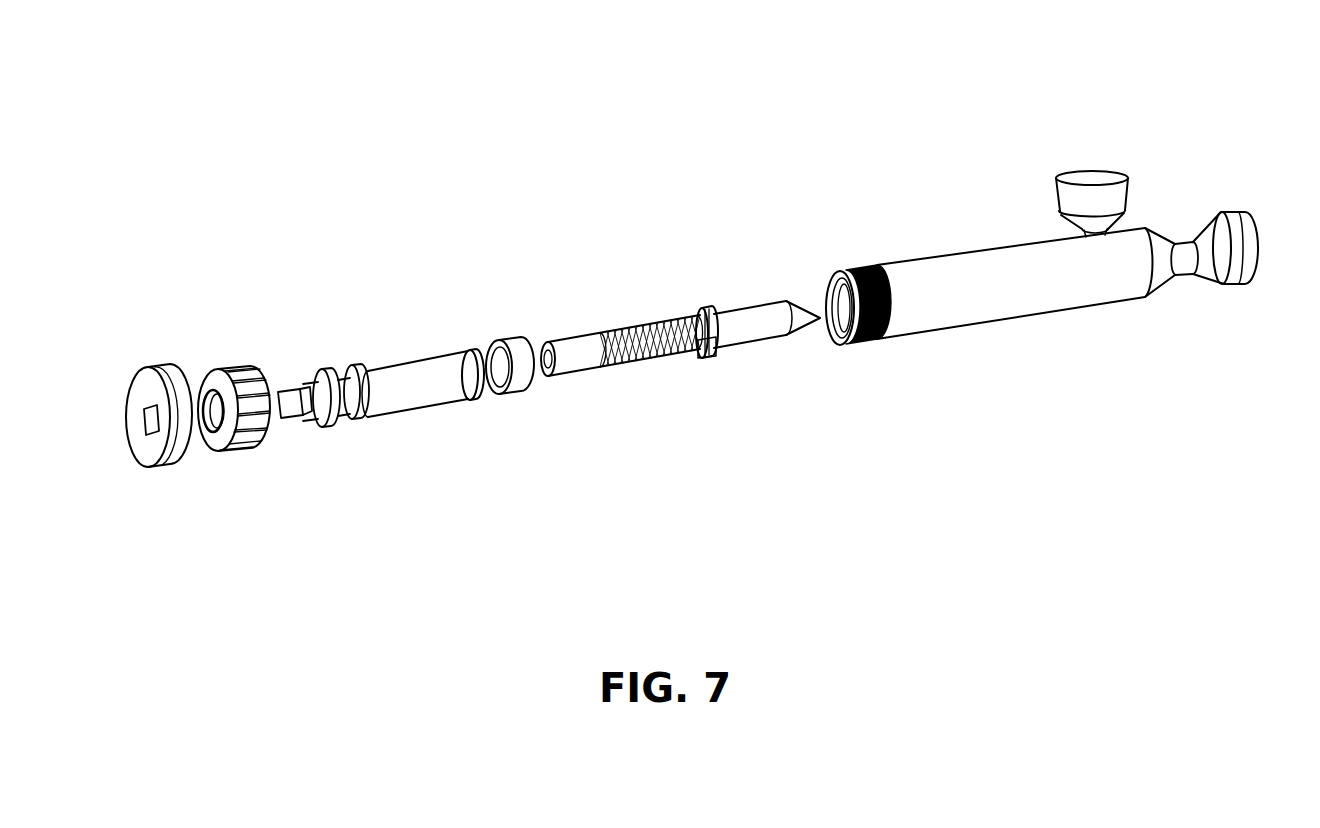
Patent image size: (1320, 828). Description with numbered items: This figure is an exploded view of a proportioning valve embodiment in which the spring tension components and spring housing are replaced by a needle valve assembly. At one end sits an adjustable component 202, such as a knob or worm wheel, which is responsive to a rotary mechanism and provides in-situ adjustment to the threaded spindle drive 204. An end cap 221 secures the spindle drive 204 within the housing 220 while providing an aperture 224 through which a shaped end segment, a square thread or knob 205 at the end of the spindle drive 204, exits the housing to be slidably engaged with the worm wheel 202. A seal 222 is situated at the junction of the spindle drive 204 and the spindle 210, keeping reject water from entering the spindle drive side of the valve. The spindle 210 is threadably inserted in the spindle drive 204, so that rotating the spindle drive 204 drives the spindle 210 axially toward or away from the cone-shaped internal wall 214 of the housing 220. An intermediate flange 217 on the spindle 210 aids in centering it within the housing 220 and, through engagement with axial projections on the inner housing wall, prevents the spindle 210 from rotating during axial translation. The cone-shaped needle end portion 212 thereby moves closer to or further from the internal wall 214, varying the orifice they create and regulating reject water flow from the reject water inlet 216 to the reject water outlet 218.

The adjustable component 202 is at (165, 373).
The end cap 221 is at (246, 400).
The aperture 224 is at (210, 427).
The square thread or knob 205 is at (292, 416).
The spindle drive 204 is at (397, 370).
The seal 222 is at (515, 337).
The spindle 210 is at (654, 334).
The intermediate flange 217 is at (707, 357).
The needle end portion 212 is at (763, 297).
The housing 220 is at (960, 270).
The reject water inlet 216 is at (1090, 187).
The internal wall 214 is at (1160, 233).
The reject water outlet 218 is at (1263, 258).